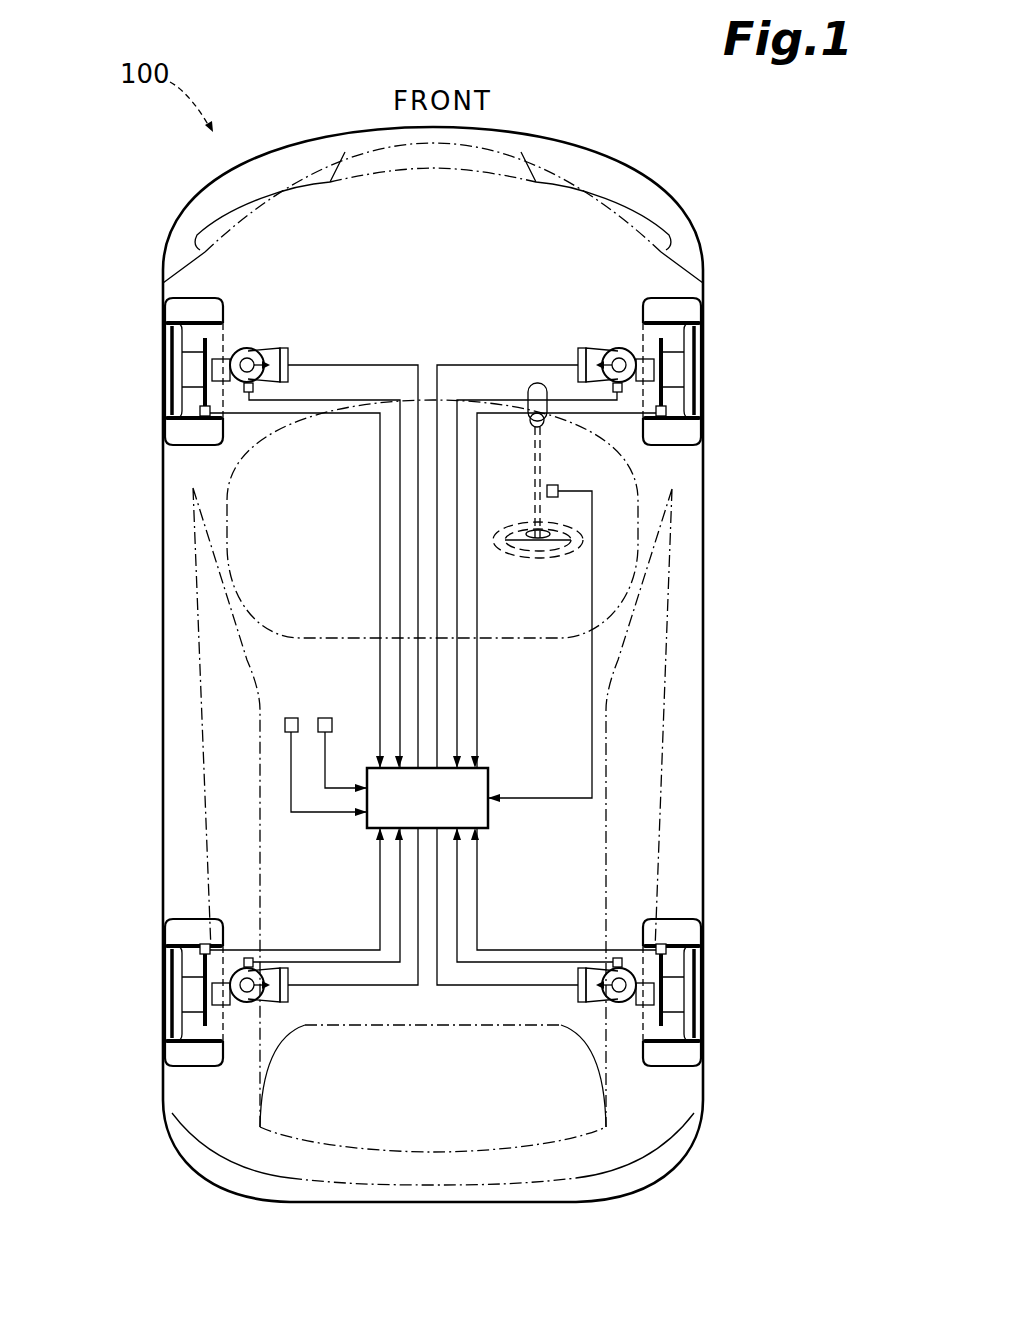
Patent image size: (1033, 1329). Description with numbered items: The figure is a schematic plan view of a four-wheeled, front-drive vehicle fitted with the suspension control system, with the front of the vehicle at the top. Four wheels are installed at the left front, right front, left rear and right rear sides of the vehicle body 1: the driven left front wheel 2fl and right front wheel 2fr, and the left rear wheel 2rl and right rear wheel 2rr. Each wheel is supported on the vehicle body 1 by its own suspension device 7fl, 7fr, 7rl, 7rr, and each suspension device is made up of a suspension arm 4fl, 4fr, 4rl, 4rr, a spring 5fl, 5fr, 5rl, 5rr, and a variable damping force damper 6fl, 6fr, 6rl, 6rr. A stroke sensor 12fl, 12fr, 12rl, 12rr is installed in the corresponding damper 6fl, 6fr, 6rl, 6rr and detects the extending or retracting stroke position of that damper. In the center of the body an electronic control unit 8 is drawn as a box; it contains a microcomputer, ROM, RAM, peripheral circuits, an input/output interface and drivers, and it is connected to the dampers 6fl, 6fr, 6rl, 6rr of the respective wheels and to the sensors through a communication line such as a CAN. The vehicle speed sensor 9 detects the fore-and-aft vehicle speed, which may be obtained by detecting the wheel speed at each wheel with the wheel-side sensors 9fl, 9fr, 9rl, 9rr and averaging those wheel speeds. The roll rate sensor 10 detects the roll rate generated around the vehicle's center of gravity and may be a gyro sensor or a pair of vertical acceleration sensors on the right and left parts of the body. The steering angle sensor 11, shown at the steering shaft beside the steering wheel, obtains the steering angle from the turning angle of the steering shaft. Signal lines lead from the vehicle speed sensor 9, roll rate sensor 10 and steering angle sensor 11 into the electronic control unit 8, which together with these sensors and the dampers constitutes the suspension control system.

The vehicle body 1 is at (624, 165).
The left front wheel 2fl is at (168, 337).
The right front wheel 2fr is at (698, 337).
The left rear wheel 2rl is at (168, 957).
The right rear wheel 2rr is at (698, 957).
The suspension arm 4fl is at (227, 374).
The suspension arm 4fr is at (639, 374).
The suspension arm 4rl is at (227, 996).
The suspension arm 4rr is at (639, 996).
The spring 5fl is at (222, 368).
The spring 5fr is at (644, 368).
The spring 5rl is at (222, 990).
The spring 5rr is at (644, 990).
The variable damping force damper 6fl is at (248, 360).
The variable damping force damper 6fr is at (618, 360).
The variable damping force damper 6rl is at (248, 1003).
The variable damping force damper 6rr is at (618, 1003).
The suspension device 7fl is at (272, 335).
The suspension device 7fr is at (594, 335).
The suspension device 7rl is at (272, 1015).
The suspension device 7rr is at (594, 1015).
The electronic control unit 8 is at (488, 768).
The vehicle speed sensor 9 is at (291, 718).
The vehicle speed sensor 9fl is at (205, 417).
The vehicle speed sensor 9fr is at (661, 417).
The vehicle speed sensor 9rl is at (204, 943).
The vehicle speed sensor 9rr is at (662, 943).
The roll rate sensor 10 is at (325, 718).
The steering angle sensor 11 is at (554, 485).
The stroke sensor 12fl is at (243, 393).
The stroke sensor 12fr is at (616, 385).
The stroke sensor 12rl is at (250, 957).
The stroke sensor 12rr is at (617, 957).